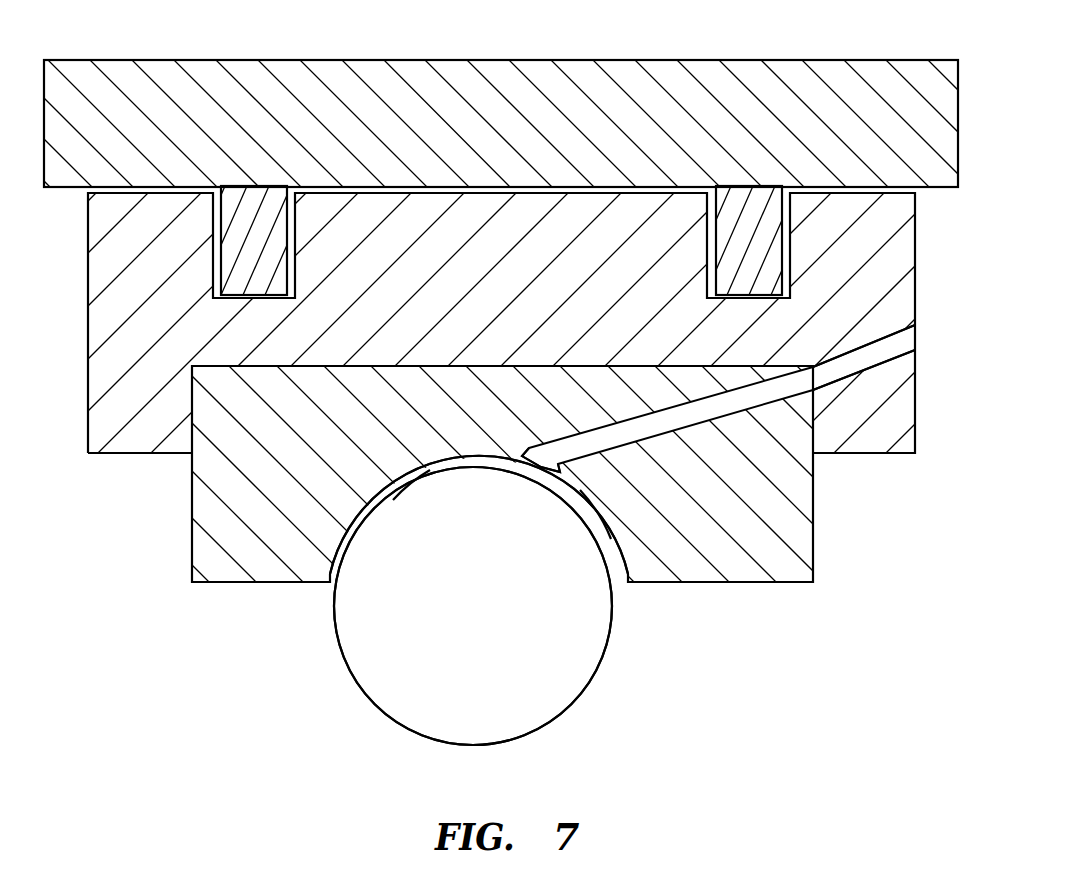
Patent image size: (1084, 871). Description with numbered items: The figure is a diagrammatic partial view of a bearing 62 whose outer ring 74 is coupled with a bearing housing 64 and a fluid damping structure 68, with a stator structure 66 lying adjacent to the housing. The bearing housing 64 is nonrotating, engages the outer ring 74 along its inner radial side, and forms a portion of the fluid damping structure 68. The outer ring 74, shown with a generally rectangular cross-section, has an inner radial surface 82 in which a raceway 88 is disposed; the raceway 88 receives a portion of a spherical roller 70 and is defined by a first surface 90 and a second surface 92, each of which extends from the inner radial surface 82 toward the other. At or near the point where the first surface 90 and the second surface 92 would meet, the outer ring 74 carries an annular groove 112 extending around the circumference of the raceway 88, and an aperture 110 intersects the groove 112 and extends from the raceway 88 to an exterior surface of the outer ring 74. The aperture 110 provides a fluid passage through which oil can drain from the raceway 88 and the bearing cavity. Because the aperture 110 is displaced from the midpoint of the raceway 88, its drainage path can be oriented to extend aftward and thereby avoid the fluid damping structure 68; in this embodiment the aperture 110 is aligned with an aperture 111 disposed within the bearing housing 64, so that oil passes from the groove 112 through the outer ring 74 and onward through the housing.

The bearing 62 is at (610, 693).
The bearing housing 64 is at (486, 306).
The stator structure 66 is at (486, 143).
The fluid damping structure 68 is at (648, 172).
The spherical roller 70 is at (461, 722).
The outer ring 74 is at (296, 445).
The inner radial surface 82 is at (227, 584).
The raceway 88 is at (618, 593).
The first surface 90 is at (393, 499).
The second surface 92 is at (611, 539).
The aperture 110 is at (690, 414).
The aperture 111 is at (864, 352).
The annular groove 112 is at (552, 464).